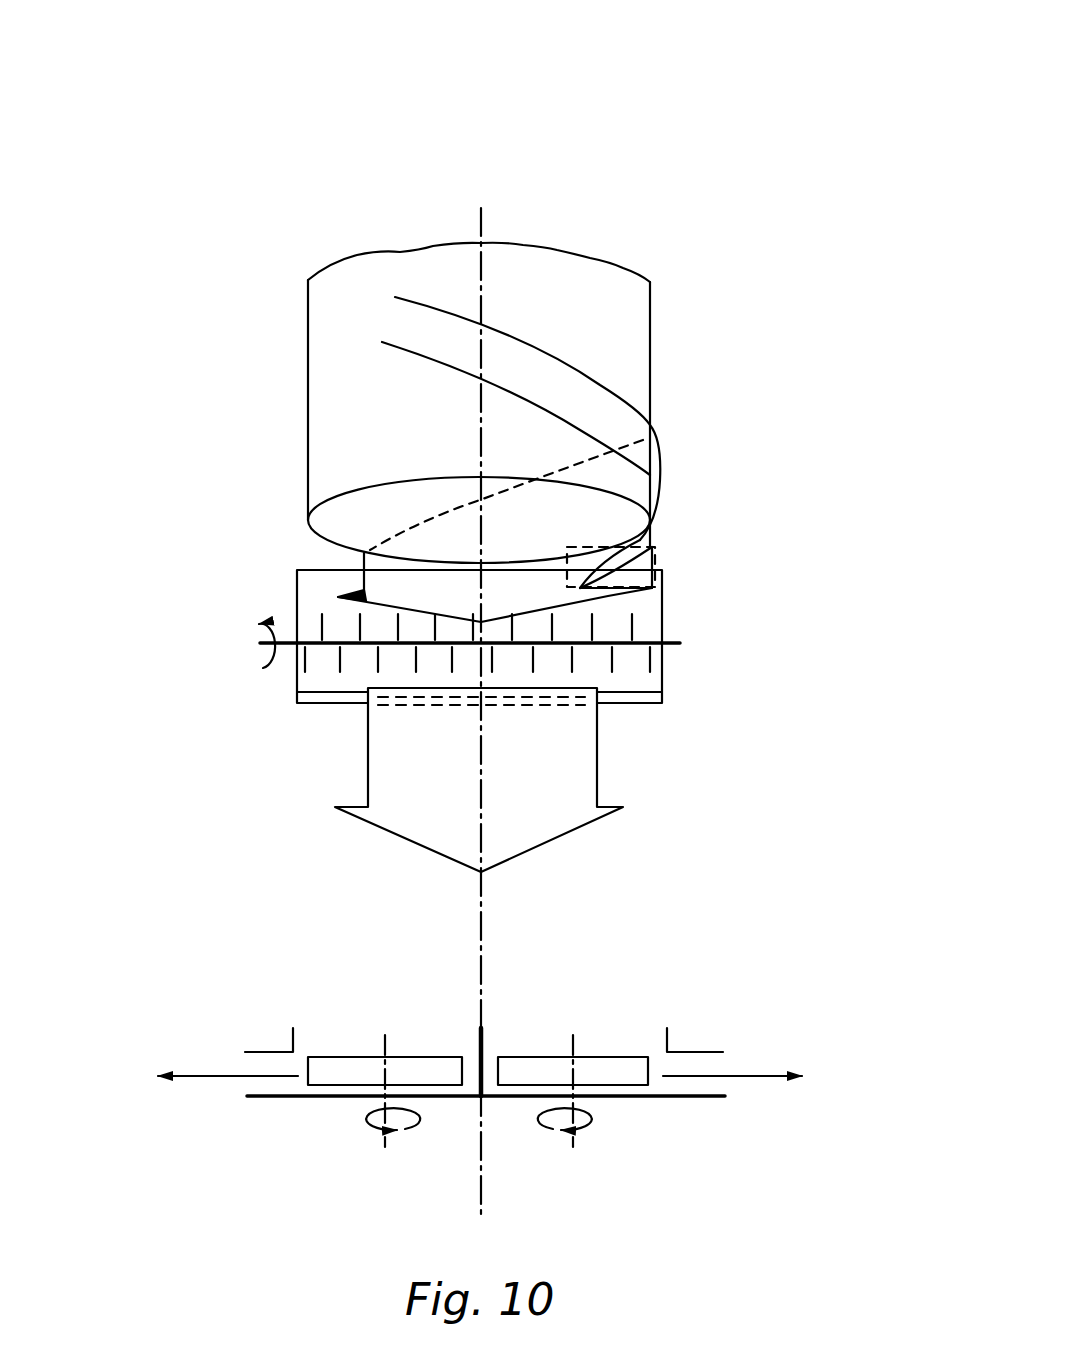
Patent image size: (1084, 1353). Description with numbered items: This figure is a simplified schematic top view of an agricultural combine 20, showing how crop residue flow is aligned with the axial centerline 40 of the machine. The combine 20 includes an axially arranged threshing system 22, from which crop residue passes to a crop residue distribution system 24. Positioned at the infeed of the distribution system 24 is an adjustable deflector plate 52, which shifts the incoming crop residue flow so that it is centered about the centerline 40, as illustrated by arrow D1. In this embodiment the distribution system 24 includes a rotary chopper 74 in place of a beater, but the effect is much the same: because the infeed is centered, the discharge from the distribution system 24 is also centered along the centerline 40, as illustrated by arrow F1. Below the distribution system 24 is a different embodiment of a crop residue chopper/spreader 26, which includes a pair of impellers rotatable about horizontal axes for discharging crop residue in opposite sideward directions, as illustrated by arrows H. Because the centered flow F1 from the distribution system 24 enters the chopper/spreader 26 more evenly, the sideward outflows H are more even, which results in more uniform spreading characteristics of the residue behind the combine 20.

The agricultural combine 20 is at (728, 122).
The axially arranged threshing system 22 is at (650, 282).
The crop residue distribution system 24 is at (660, 568).
The crop residue chopper/spreader 26 is at (703, 1018).
The centerline 40 is at (482, 222).
The adjustable deflector plate 52 is at (648, 547).
The rotary chopper 74 is at (295, 585).
The arrow D1 is at (628, 588).
The arrow F1 is at (597, 765).
The arrows H is at (223, 1076).